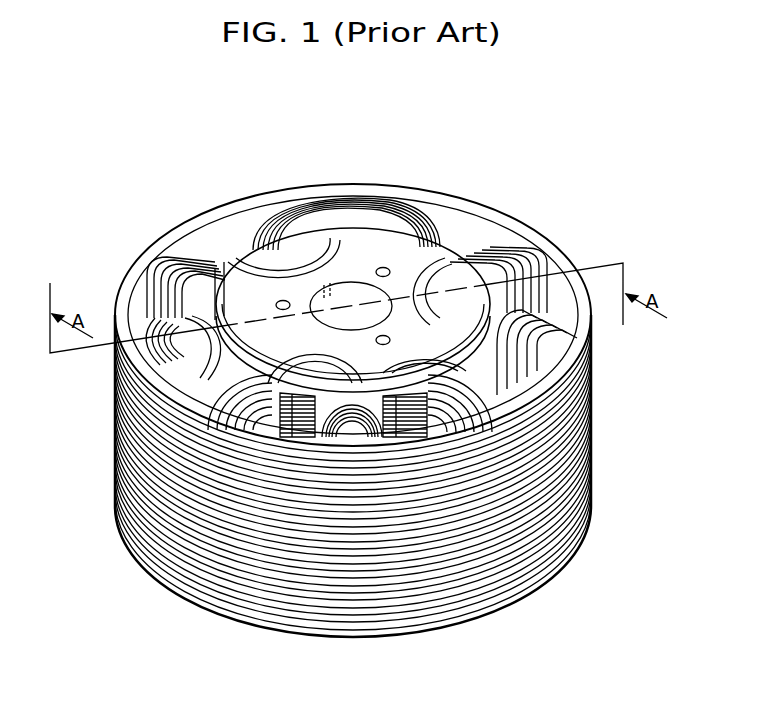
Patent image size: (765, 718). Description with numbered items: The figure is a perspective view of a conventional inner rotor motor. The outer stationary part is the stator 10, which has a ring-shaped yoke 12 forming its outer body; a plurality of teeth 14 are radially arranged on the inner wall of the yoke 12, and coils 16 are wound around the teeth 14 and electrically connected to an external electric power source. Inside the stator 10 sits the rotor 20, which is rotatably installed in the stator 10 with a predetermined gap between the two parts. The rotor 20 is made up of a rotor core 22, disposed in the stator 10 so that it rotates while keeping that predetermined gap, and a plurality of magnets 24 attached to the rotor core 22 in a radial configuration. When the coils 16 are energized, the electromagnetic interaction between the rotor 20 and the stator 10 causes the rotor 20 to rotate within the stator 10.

The stator 10 is at (297, 410).
The yoke 12 is at (118, 378).
The teeth 14 is at (212, 408).
The coils 16 is at (198, 396).
The rotor 20 is at (429, 349).
The rotor core 22 is at (488, 340).
The magnets 24 is at (485, 334).